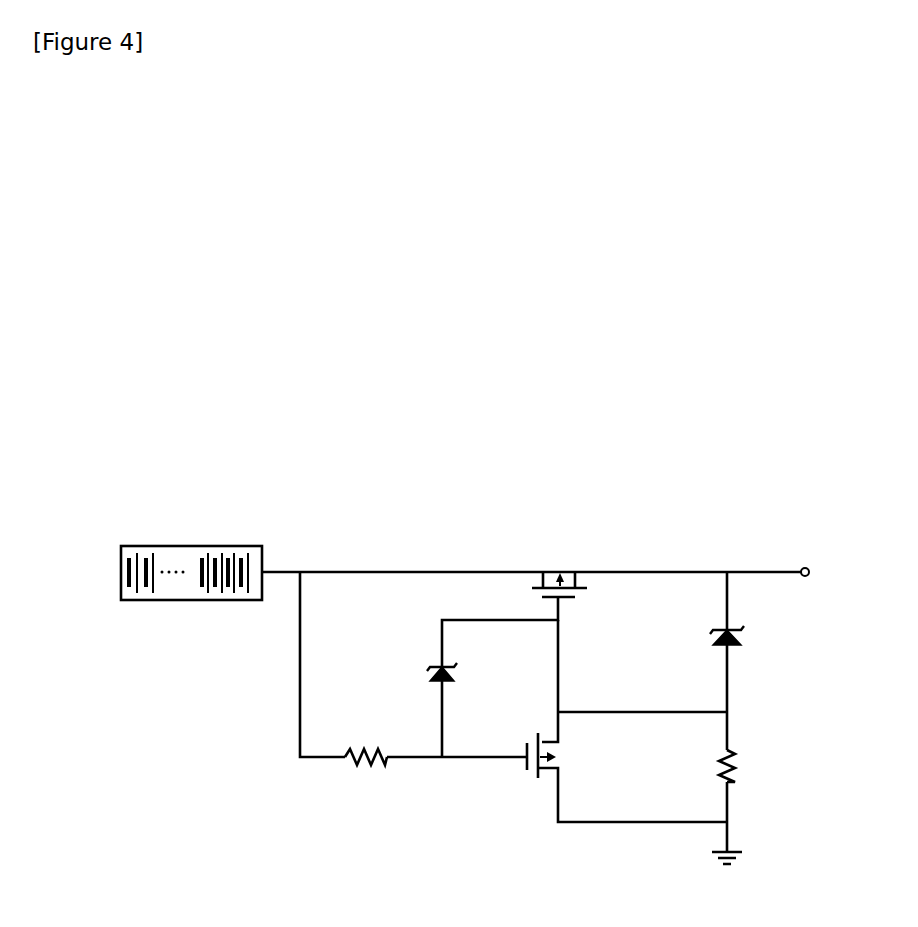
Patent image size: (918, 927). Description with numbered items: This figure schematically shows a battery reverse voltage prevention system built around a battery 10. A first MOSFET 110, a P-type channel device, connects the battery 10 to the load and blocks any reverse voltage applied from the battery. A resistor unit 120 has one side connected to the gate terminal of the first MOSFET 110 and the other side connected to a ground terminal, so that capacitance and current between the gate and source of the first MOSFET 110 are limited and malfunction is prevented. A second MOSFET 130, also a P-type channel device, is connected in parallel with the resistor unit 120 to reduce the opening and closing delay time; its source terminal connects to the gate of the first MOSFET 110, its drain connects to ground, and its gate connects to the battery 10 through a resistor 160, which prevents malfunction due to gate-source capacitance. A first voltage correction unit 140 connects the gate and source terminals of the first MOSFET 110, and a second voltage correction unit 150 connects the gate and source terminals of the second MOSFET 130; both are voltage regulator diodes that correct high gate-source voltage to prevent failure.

The battery 10 is at (122, 550).
The first MOSFET 110 is at (550, 570).
The resistor unit 120 is at (737, 762).
The second MOSFET 130 is at (536, 778).
The first voltage correction unit 140 is at (740, 640).
The second voltage correction unit 150 is at (440, 668).
The resistor 160 is at (345, 760).